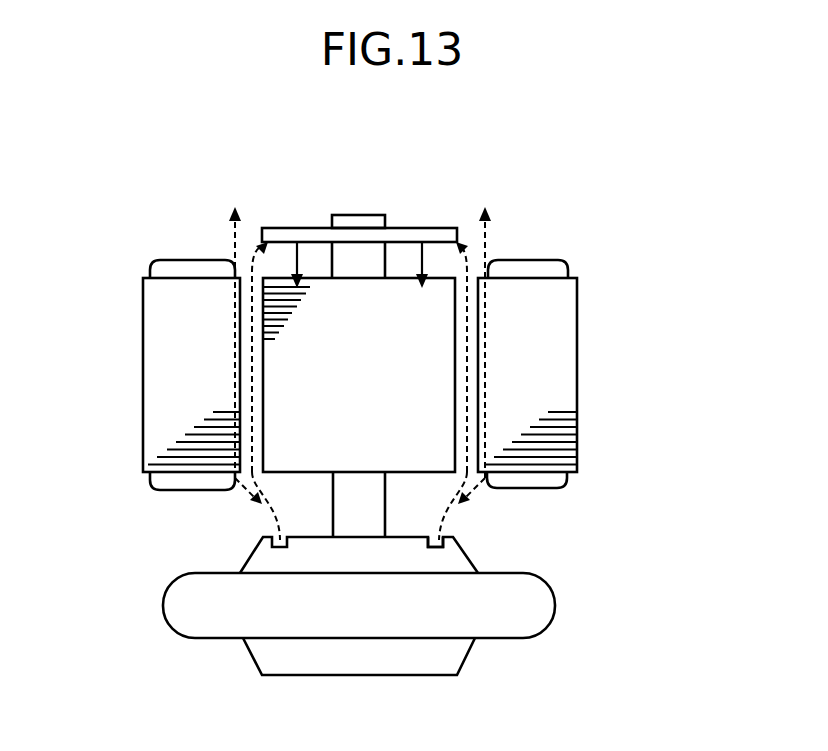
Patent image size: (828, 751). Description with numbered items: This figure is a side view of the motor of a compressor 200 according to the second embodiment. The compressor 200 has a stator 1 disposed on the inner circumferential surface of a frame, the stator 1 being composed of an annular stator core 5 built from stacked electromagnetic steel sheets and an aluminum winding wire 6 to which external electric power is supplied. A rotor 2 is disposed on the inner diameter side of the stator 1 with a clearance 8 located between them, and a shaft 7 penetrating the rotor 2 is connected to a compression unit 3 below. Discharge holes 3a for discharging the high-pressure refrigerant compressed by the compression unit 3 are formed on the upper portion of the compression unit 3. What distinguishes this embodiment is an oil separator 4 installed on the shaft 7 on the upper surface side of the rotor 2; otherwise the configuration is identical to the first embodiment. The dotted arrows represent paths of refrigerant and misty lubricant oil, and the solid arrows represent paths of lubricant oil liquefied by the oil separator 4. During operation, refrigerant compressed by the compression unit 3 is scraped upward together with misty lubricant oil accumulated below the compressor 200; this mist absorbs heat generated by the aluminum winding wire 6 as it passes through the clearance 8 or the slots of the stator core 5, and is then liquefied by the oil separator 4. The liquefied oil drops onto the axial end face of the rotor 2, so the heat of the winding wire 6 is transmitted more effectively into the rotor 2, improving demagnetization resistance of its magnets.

The compressor 200 is at (461, 168).
The stator 1 is at (579, 326).
The rotor 2 is at (413, 397).
The compression unit 3 is at (500, 563).
The discharge hole 3a is at (445, 533).
The oil separator 4 is at (458, 237).
The stator core 5 is at (577, 293).
The aluminum winding wire 6 is at (557, 260).
The shaft 7 is at (333, 503).
The clearance 8 is at (245, 445).